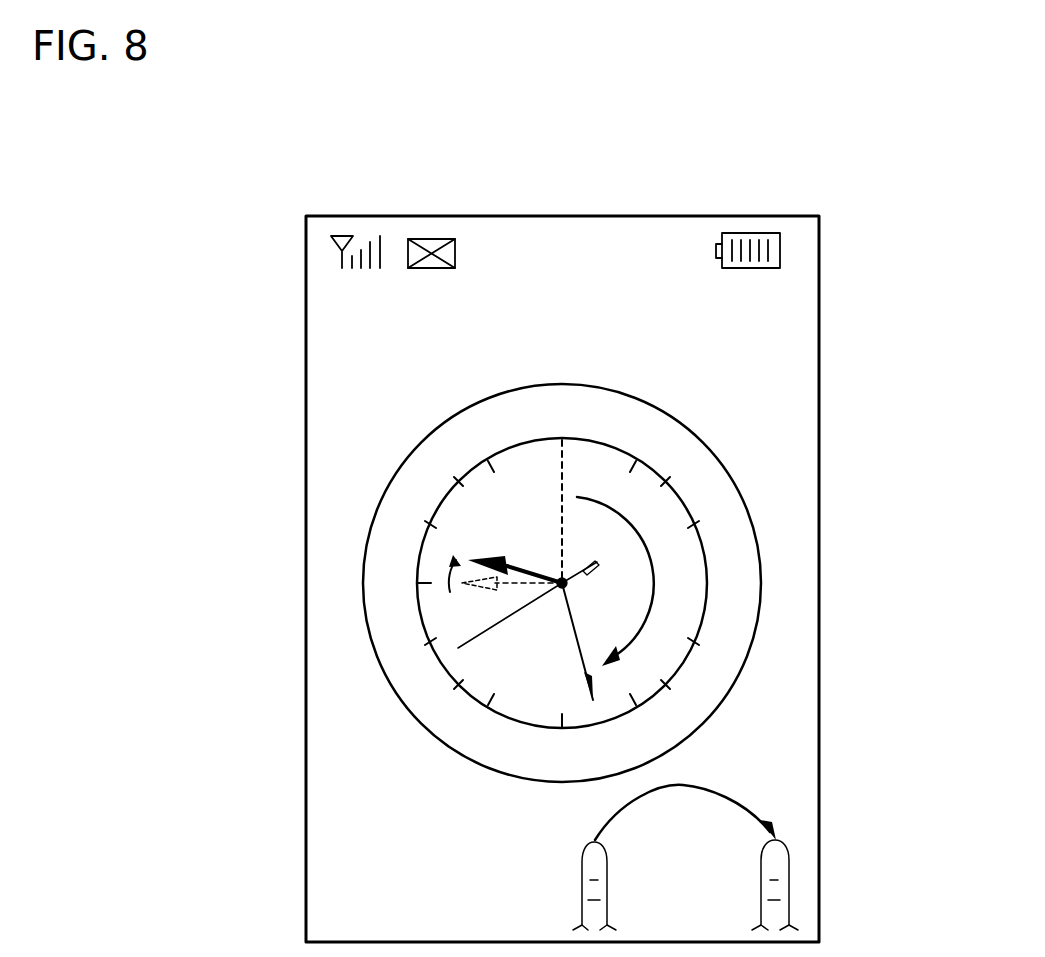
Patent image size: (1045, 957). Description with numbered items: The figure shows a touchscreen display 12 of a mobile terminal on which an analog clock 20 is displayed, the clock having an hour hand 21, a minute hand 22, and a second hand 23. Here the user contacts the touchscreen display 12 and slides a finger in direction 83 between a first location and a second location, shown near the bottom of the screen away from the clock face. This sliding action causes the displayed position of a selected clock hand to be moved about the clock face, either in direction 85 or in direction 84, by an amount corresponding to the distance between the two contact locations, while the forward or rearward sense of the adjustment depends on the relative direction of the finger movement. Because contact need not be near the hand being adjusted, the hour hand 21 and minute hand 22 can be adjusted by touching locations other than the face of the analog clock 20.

The touchscreen display 12 is at (819, 370).
The analog clock 20 is at (737, 677).
The hour hand 21 is at (505, 568).
The minute hand 22 is at (585, 665).
The second hand 23 is at (493, 626).
The direction 83 is at (683, 786).
The direction 84 is at (644, 608).
The direction 85 is at (455, 568).